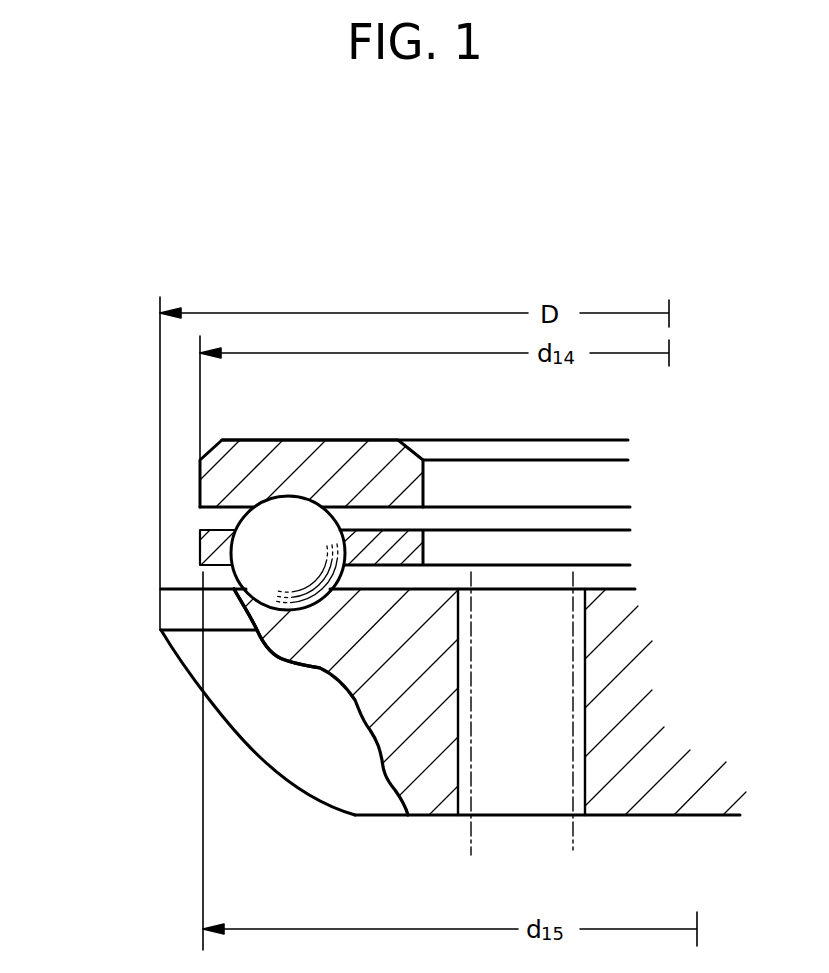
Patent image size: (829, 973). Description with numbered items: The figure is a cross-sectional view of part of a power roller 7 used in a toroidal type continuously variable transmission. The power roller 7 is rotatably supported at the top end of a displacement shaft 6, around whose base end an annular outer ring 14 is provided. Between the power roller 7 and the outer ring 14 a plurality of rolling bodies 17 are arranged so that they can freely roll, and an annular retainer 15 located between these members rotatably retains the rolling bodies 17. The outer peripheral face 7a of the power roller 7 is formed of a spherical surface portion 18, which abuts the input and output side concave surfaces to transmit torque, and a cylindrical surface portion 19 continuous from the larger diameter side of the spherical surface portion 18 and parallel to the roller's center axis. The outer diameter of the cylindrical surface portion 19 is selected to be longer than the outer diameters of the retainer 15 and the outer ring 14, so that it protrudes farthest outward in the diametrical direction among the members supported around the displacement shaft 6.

The outer ring 14 is at (270, 463).
The retainer 15 is at (402, 540).
The rolling bodies 17 is at (252, 558).
The cylindrical surface portion 19 is at (173, 604).
The spherical surface portion 18 is at (188, 660).
The power roller 7 is at (410, 815).
The outer peripheral face 7a is at (287, 758).
The displacement shaft 6 is at (577, 838).